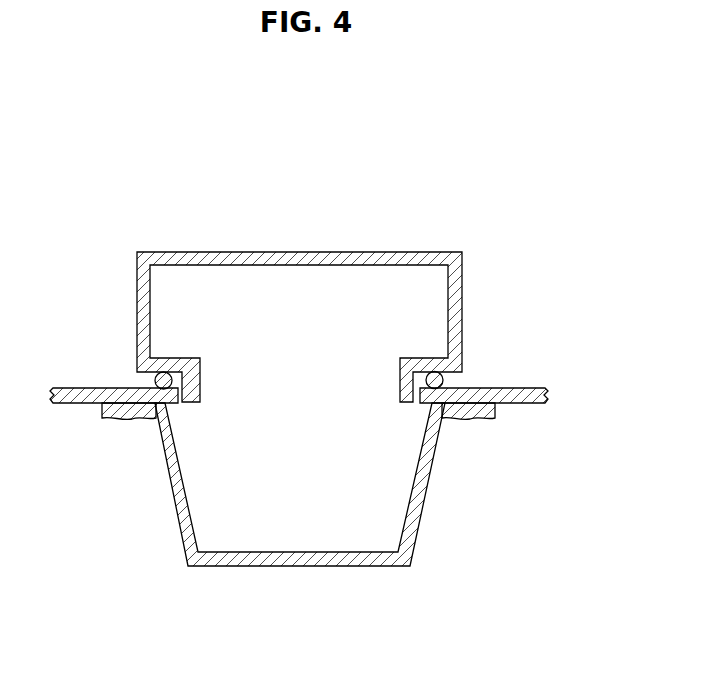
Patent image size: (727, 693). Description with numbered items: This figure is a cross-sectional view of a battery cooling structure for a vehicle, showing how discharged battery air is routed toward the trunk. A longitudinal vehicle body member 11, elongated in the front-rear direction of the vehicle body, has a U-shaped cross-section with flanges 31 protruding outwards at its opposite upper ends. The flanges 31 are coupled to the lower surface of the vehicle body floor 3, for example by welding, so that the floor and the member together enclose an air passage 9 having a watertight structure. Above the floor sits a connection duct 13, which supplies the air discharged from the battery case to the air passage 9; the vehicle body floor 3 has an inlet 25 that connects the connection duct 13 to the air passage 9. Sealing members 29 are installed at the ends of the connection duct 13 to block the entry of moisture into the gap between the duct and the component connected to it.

The vehicle body floor 3 is at (88, 388).
The air passage 9 is at (308, 488).
The longitudinal vehicle body member 11 is at (408, 533).
The connection duct 13 is at (368, 263).
The inlet 25 is at (258, 362).
The sealing member 29 is at (463, 358).
The flange 31 is at (128, 420).